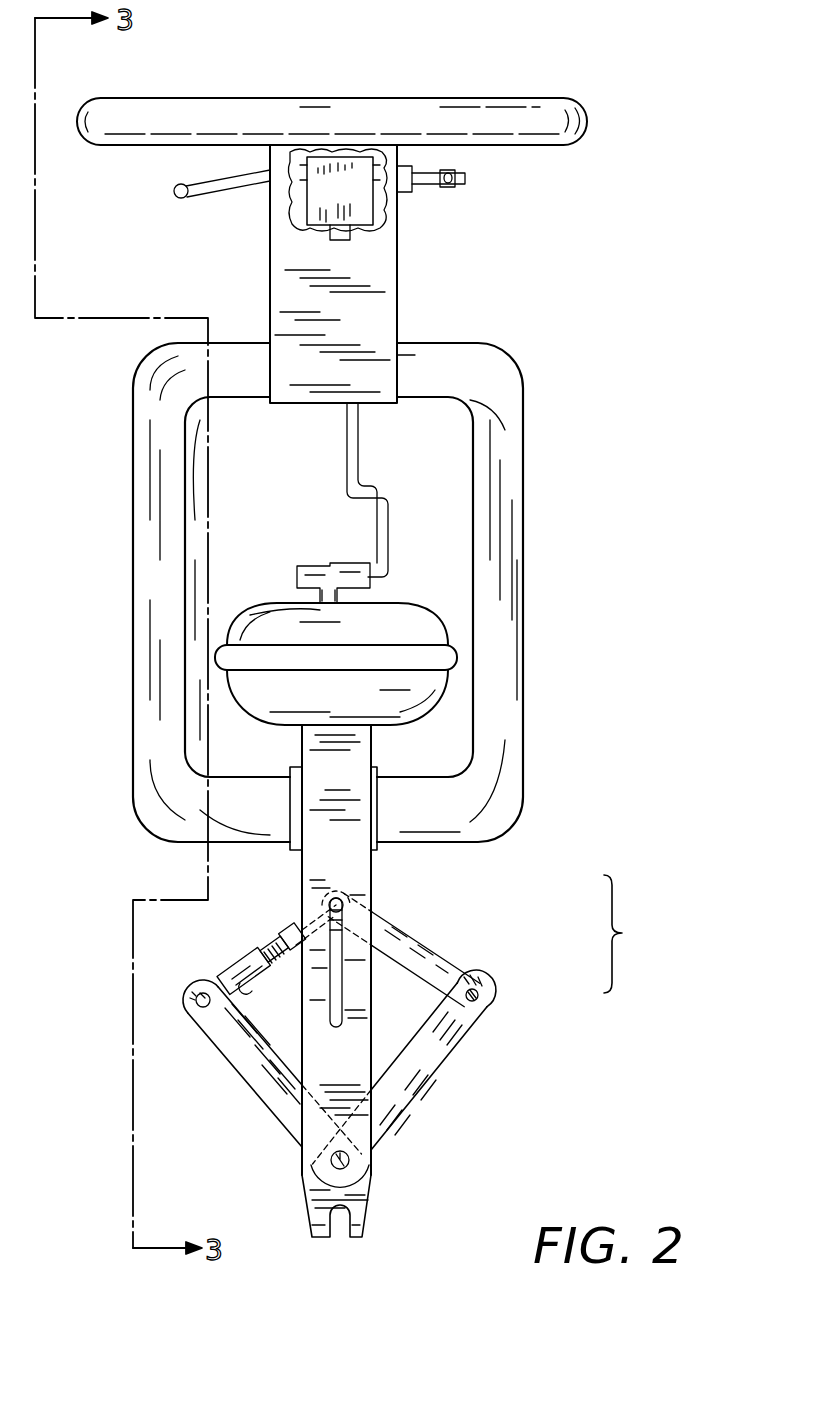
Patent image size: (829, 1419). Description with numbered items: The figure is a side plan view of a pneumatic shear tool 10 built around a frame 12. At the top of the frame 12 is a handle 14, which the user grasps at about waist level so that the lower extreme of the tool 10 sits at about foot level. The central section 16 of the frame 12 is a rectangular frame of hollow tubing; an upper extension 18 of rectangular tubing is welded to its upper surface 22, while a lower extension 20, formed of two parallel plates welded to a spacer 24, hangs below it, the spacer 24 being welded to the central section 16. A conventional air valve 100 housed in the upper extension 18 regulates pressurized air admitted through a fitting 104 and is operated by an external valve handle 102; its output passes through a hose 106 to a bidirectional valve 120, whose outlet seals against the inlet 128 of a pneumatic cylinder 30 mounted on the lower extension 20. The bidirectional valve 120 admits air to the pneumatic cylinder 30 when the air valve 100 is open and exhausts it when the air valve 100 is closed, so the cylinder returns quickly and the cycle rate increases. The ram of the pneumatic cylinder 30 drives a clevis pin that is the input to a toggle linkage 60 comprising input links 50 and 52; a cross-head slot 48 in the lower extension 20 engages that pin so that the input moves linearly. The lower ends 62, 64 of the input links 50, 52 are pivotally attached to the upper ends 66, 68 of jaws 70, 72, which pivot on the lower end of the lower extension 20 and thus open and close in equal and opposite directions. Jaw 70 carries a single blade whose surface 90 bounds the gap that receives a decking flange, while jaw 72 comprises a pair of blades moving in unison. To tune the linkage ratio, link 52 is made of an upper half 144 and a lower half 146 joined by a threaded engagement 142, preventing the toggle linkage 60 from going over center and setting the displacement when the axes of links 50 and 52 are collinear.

The tool 10 is at (702, 445).
The frame 12 is at (530, 627).
The handle 14 is at (590, 125).
The central section 16 is at (525, 543).
The upper extension 18 is at (397, 290).
The lower extension 20 is at (371, 886).
The upper surface 22 is at (397, 345).
The spacer 24 is at (377, 845).
The pneumatic cylinder 30 is at (440, 700).
The cross-head slot 48 is at (342, 975).
The input link 50 is at (437, 958).
The input link 52 is at (243, 958).
The toggle linkage 60 is at (631, 934).
The lower end of input link 50 62 is at (490, 980).
The lower end of input link 52 64 is at (184, 996).
The upper end of jaw 70 66 is at (490, 1010).
The upper end of jaw 72 68 is at (196, 1018).
The jaw 70 is at (455, 1075).
The jaw 72 is at (240, 1078).
The surface 90 is at (350, 1156).
The air valve 100 is at (362, 196).
The valve handle 102 is at (203, 196).
The fitting 104 is at (450, 187).
The hose 106 is at (357, 445).
The bidirectional valve 120 is at (338, 562).
The inlet 128 is at (340, 600).
The threaded bolt 142 is at (272, 950).
The upper half 144 is at (296, 920).
The lower half 146 is at (242, 985).